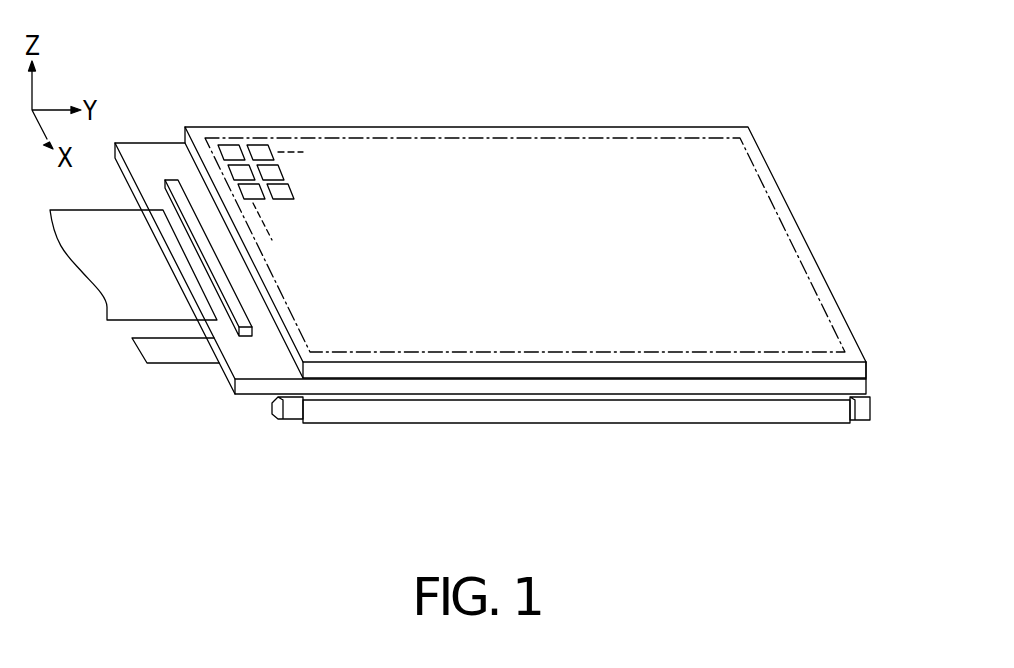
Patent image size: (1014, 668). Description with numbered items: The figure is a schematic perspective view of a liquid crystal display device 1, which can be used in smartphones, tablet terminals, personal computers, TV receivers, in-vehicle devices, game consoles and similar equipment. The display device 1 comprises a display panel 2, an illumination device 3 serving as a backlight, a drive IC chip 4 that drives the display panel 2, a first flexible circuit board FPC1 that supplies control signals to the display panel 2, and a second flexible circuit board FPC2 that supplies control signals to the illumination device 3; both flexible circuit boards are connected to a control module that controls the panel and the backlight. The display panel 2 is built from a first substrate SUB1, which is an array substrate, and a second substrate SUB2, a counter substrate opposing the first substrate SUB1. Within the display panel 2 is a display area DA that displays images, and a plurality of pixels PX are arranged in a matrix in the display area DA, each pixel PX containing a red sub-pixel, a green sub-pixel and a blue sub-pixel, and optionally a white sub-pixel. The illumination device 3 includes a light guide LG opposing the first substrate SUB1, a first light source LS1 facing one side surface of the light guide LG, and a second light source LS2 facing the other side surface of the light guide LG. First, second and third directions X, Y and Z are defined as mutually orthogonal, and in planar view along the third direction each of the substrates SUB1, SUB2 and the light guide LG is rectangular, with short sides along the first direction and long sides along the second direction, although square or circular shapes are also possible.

The liquid crystal display device 1 is at (466, 279).
The display panel 2 is at (490, 291).
The illumination device 3 is at (571, 463).
The drive IC chip 4 is at (172, 181).
The first substrate SUB1 is at (666, 389).
The second substrate SUB2 is at (733, 373).
The display area DA is at (437, 138).
The pixel PX is at (259, 145).
The first flexible circuit board FPC1 is at (96, 290).
The second flexible circuit board FPC2 is at (172, 365).
The light guide LG is at (398, 423).
The first light source LS1 is at (265, 438).
The second light source LS2 is at (881, 432).